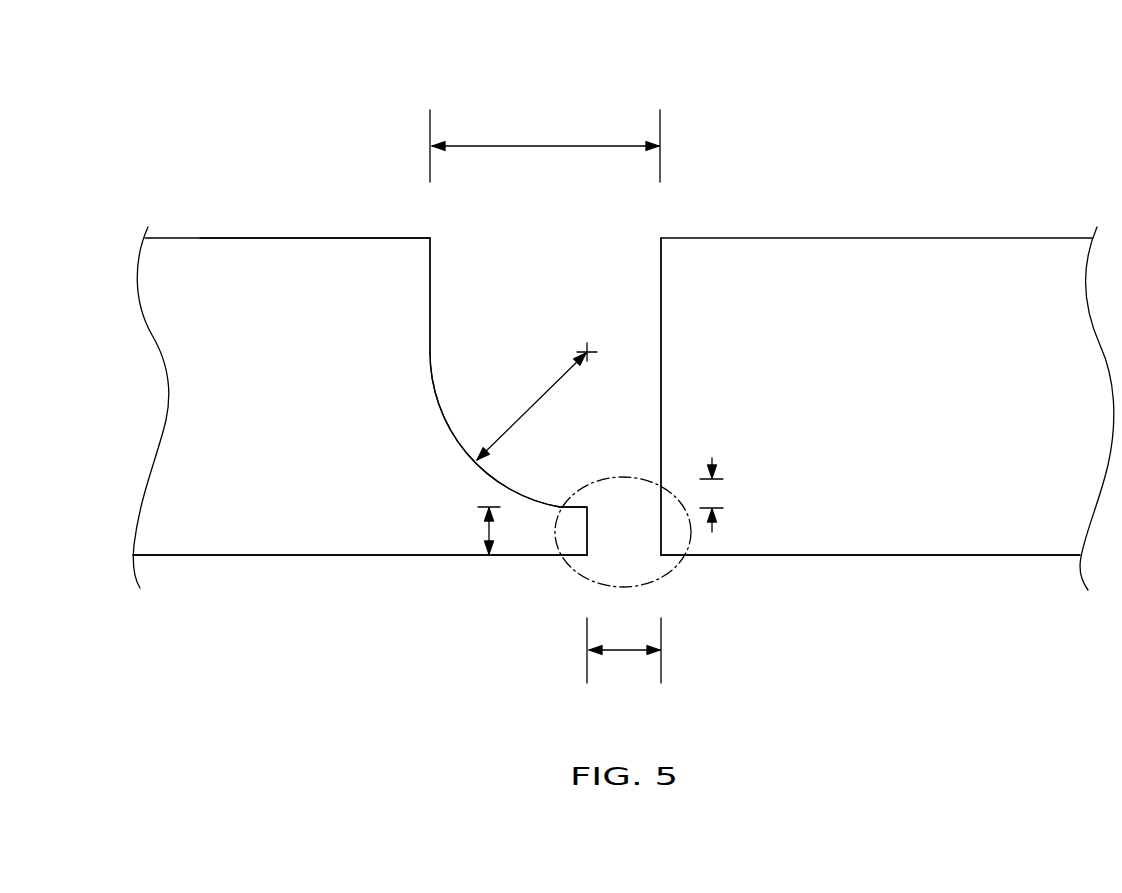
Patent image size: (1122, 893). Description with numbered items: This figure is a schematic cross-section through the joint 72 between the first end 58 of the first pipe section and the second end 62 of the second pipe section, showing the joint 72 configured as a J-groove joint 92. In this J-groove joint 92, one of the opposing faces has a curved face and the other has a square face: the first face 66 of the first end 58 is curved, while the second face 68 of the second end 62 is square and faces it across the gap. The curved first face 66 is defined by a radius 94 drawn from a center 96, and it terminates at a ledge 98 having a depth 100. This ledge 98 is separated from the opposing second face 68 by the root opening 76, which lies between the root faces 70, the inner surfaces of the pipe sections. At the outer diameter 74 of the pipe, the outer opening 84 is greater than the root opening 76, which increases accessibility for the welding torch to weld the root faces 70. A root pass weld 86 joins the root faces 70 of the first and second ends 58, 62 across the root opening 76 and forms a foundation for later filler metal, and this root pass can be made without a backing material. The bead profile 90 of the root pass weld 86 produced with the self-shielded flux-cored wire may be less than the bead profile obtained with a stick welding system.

The first end 58 is at (267, 237).
The second end 62 is at (973, 238).
The first face 66 is at (432, 348).
The second face 68 is at (660, 313).
The root faces 70 is at (437, 565).
The joint 72 is at (690, 66).
The outer diameter 74 is at (307, 228).
The root opening 76 is at (620, 652).
The outer opening 84 is at (546, 146).
The root pass weld 86 is at (655, 592).
The bead profile 90 is at (713, 460).
The J-groove joint 92 is at (619, 289).
The radius 94 is at (533, 407).
The center 96 is at (584, 350).
The ledge 98 is at (574, 534).
The depth 100 is at (486, 530).